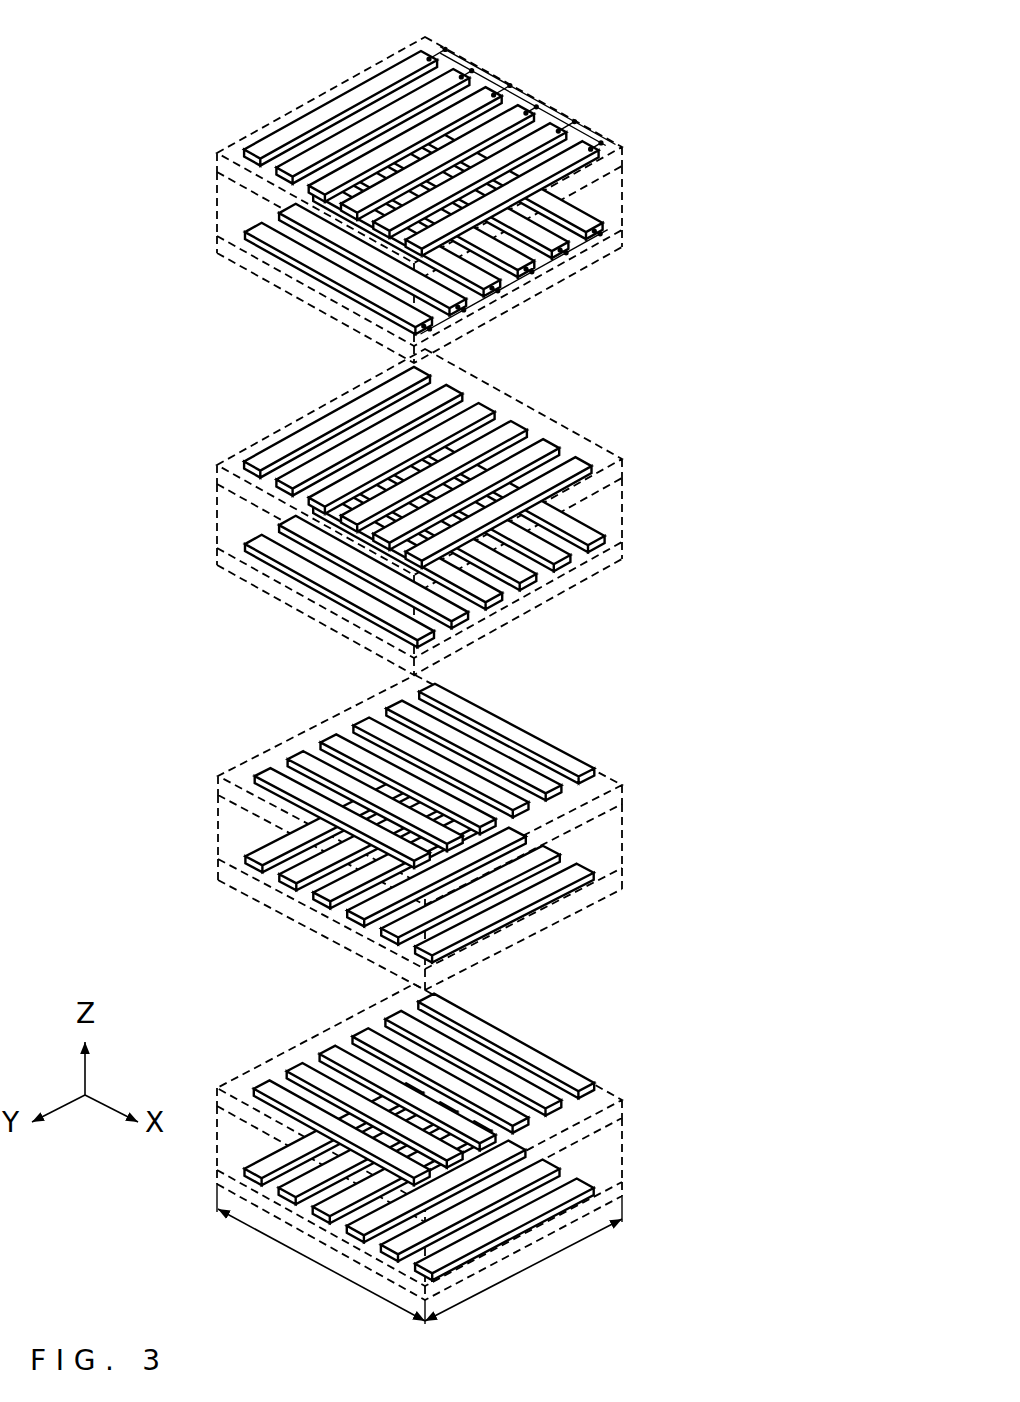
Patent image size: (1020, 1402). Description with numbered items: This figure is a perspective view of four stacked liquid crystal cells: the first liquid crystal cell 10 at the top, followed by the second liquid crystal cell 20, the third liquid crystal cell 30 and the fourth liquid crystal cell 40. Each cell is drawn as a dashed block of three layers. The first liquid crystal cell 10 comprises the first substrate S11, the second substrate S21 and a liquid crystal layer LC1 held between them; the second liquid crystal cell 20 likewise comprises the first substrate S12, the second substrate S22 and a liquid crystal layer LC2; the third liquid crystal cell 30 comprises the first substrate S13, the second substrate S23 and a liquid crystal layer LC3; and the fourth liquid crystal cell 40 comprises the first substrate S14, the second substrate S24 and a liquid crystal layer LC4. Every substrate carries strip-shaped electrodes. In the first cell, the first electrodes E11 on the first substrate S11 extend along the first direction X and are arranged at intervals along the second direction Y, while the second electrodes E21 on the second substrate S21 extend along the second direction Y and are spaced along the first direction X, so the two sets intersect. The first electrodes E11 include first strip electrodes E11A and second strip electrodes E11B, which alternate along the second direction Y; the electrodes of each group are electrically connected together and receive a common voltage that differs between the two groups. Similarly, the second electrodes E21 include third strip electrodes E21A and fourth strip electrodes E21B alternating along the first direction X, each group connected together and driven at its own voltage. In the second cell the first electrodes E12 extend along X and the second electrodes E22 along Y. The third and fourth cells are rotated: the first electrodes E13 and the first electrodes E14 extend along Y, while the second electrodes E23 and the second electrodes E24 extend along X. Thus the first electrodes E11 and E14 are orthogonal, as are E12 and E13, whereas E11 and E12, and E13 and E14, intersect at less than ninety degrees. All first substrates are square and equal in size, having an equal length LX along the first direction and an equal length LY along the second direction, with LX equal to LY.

The first liquid crystal cell 10 is at (477, 201).
The second liquid crystal cell 20 is at (477, 512).
The third liquid crystal cell 30 is at (478, 832).
The fourth liquid crystal cell 40 is at (477, 1154).
The second substrate S21 is at (623, 148).
The liquid crystal layer LC1 is at (623, 197).
The first substrate S11 is at (623, 246).
The second substrate S22 is at (454, 471).
The liquid crystal layer LC2 is at (456, 568).
The first substrate S12 is at (454, 608).
The second substrate S23 is at (623, 787).
The liquid crystal layer LC3 is at (623, 834).
The first substrate S13 is at (623, 878).
The second substrate S24 is at (623, 1101).
The liquid crystal layer LC4 is at (623, 1150).
The first substrate S14 is at (623, 1189).
The second electrodes E21 is at (424, 133).
The third strip electrodes E21A is at (465, 167).
The fourth strip electrodes E21B is at (367, 192).
The first electrodes E11 is at (446, 260).
The first strip electrodes E11A is at (560, 250).
The second strip electrodes E11B is at (527, 270).
The second electrodes E22 is at (417, 467).
The first electrodes E12 is at (425, 552).
The second electrodes E23 is at (590, 780).
The first electrodes E13 is at (322, 904).
The second electrodes E24 is at (521, 1088).
The first electrodes E14 is at (321, 1210).
The length along the first direction X LX is at (312, 1265).
The length along the second direction Y LY is at (525, 1265).